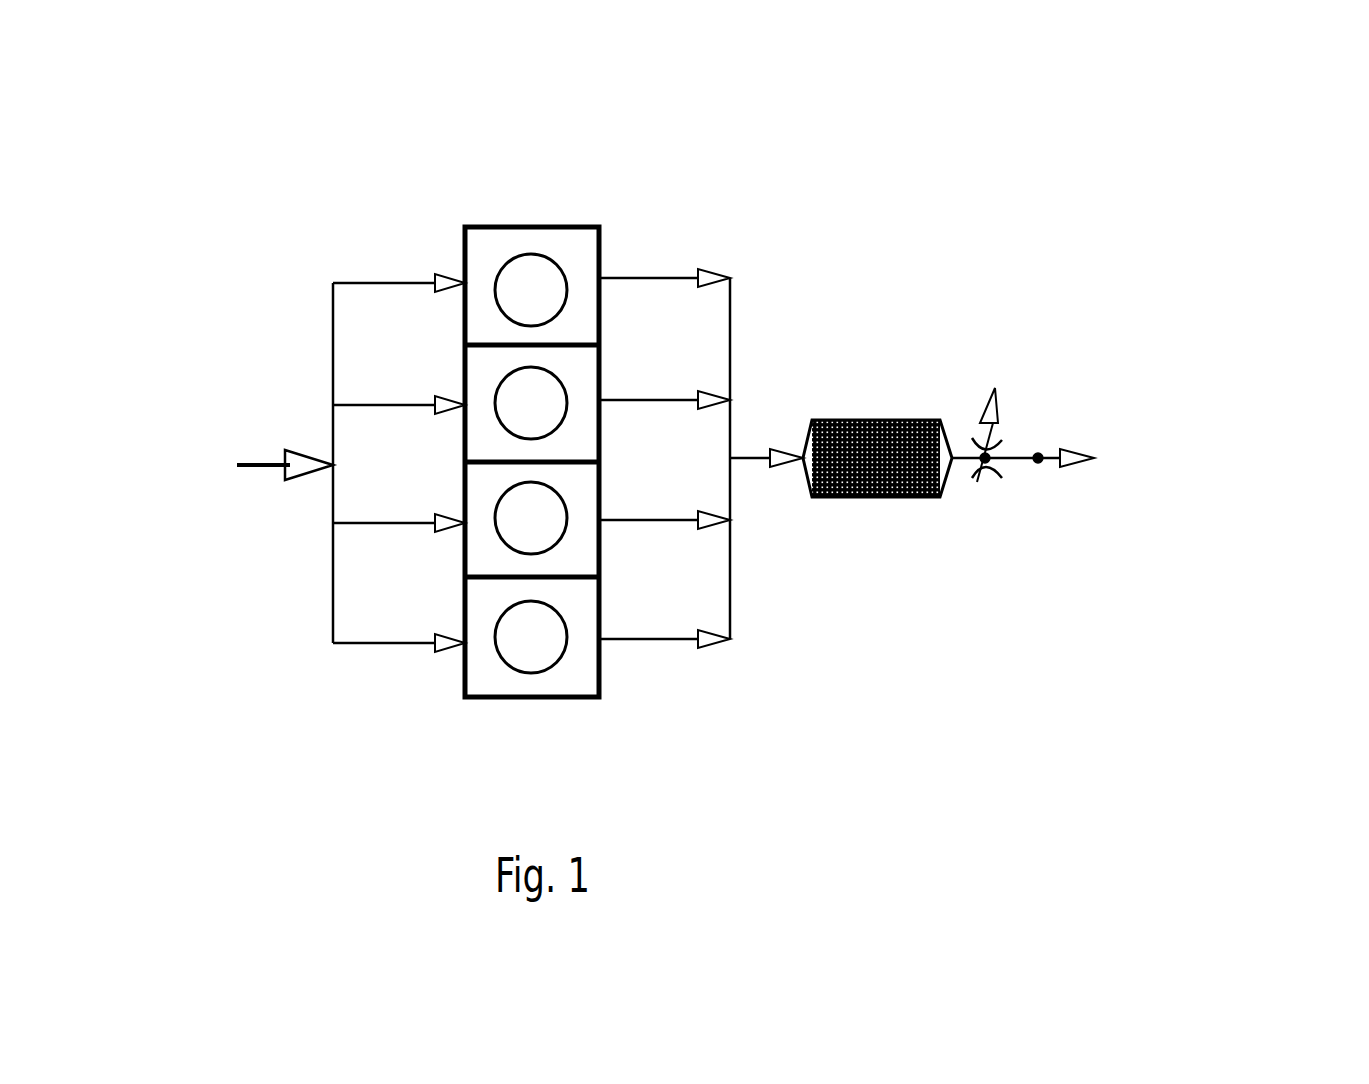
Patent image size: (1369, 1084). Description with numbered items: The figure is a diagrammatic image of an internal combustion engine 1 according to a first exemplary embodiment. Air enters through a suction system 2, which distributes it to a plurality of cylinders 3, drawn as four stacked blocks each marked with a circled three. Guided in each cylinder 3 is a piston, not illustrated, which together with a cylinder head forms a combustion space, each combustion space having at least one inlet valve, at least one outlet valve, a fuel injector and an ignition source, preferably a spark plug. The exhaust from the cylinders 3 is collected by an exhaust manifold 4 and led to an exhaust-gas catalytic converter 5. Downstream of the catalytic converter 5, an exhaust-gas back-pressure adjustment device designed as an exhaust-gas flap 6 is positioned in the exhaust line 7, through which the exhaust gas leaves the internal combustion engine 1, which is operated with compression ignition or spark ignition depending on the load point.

The internal combustion engine 1 is at (135, 188).
The suction system 2 is at (331, 305).
The cylinders 3 is at (543, 309).
The exhaust manifold 4 is at (655, 278).
The exhaust-gas catalytic converter 5 is at (847, 497).
The exhaust-gas flap 6 is at (985, 466).
The exhaust line 7 is at (1038, 458).